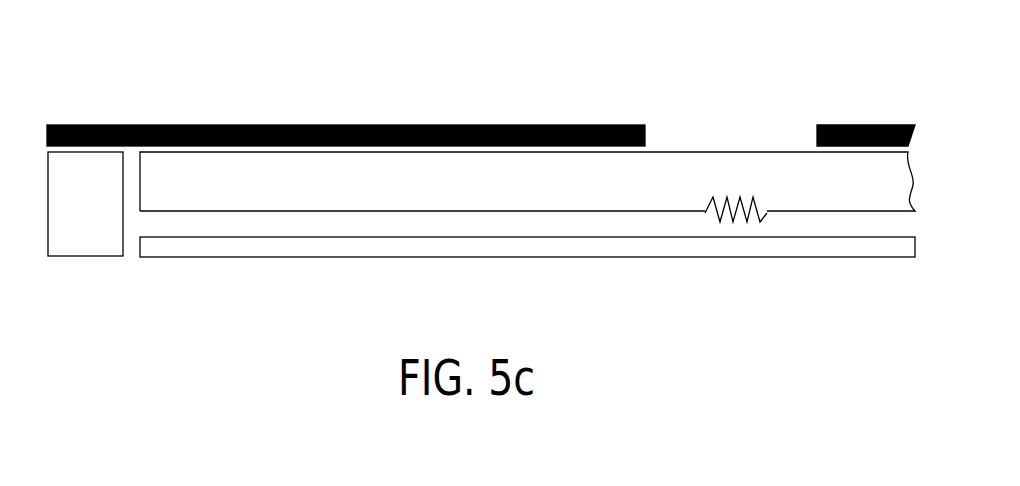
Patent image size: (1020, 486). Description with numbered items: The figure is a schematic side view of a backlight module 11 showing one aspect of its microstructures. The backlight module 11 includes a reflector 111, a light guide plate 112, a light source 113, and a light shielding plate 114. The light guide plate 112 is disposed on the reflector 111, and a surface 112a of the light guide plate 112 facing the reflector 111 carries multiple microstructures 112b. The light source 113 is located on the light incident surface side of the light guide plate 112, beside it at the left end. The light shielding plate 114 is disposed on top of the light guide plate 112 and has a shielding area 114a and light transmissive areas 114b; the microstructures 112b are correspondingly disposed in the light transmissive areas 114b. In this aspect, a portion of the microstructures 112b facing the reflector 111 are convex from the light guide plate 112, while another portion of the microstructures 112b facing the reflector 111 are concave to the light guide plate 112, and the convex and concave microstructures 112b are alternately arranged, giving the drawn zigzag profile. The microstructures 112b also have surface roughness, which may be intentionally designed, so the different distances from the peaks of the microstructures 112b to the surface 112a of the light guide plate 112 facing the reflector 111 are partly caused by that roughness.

The backlight module 11 is at (102, 110).
The reflector 111 is at (350, 247).
The light guide plate 112 is at (171, 217).
The surface 112a is at (235, 228).
The microstructures 112b is at (758, 218).
The light source 113 is at (87, 243).
The light shielding plate 114 is at (678, 53).
The shielding area 114a is at (530, 125).
The light transmissive areas 114b is at (702, 128).